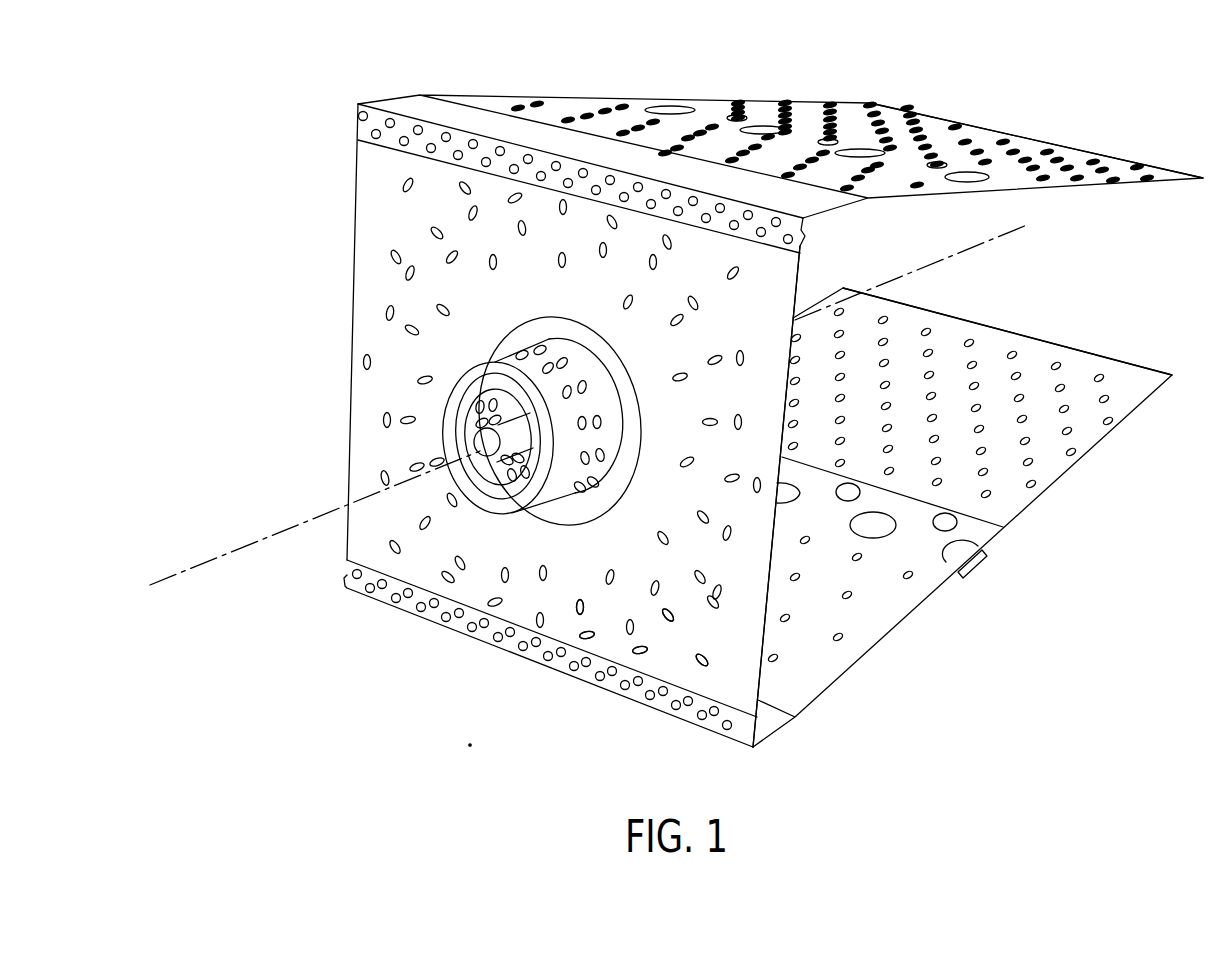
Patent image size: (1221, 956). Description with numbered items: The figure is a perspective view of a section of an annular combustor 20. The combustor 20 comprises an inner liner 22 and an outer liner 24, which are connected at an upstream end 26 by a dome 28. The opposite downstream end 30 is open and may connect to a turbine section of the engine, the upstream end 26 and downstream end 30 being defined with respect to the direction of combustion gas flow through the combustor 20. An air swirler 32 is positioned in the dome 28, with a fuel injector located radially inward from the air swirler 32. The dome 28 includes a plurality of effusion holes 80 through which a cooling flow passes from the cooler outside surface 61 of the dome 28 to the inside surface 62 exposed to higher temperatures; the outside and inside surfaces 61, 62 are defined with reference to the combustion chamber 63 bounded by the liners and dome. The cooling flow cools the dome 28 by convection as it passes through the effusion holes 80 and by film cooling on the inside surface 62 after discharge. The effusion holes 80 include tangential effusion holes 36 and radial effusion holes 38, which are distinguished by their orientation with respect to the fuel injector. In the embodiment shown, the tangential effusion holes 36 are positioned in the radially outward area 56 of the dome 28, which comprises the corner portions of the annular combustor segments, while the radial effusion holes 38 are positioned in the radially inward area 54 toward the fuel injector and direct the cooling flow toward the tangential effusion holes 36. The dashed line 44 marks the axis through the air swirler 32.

The combustor 20 is at (280, 122).
The inner liner 22 is at (897, 606).
The outer liner 24 is at (803, 108).
The upstream end 26 is at (404, 104).
The dome 28 is at (356, 316).
The downstream end 30 is at (1170, 176).
The air swirler 32 is at (445, 428).
The tangential effusion hole 36 is at (632, 658).
The radial effusion hole 38 is at (585, 606).
The central axis 44 is at (218, 556).
The radially inward area 54 is at (600, 612).
The radially outward area 56 is at (682, 640).
The outside surface 61 is at (730, 688).
The inside surface 62 is at (765, 630).
The combustion chamber 63 is at (908, 395).
The effusion holes 80 is at (404, 186).